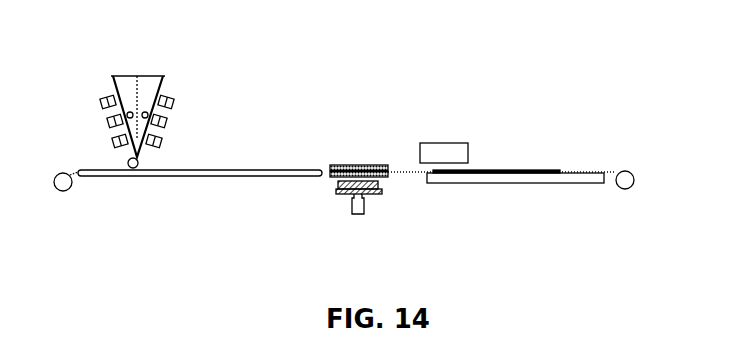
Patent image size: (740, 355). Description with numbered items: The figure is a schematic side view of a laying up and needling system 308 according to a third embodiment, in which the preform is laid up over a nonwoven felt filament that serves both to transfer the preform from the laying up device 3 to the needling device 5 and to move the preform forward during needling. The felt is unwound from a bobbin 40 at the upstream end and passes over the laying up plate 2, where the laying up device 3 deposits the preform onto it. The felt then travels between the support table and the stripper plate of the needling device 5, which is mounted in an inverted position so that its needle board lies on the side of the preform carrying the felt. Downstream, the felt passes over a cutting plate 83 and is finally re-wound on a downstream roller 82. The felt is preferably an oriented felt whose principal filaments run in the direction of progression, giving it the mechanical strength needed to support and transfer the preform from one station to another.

The laying up plate 2 is at (230, 177).
The laying up device 3 is at (129, 72).
The needling device 5 is at (358, 160).
The bobbin 40 is at (65, 191).
The downstream roller 82 is at (623, 189).
The cutting plate 83 is at (453, 184).
The system 308 is at (280, 100).